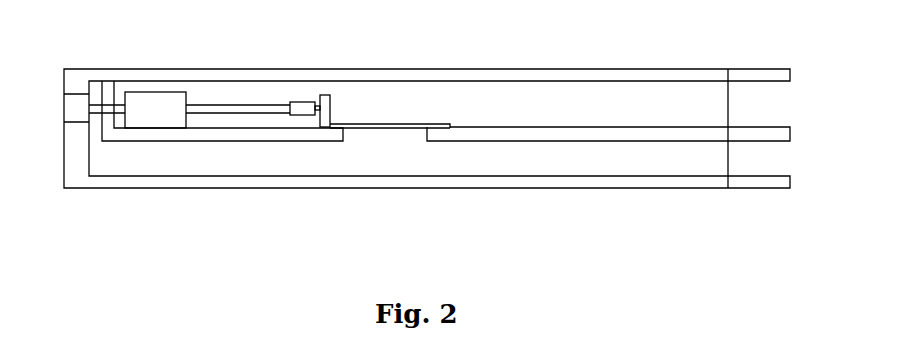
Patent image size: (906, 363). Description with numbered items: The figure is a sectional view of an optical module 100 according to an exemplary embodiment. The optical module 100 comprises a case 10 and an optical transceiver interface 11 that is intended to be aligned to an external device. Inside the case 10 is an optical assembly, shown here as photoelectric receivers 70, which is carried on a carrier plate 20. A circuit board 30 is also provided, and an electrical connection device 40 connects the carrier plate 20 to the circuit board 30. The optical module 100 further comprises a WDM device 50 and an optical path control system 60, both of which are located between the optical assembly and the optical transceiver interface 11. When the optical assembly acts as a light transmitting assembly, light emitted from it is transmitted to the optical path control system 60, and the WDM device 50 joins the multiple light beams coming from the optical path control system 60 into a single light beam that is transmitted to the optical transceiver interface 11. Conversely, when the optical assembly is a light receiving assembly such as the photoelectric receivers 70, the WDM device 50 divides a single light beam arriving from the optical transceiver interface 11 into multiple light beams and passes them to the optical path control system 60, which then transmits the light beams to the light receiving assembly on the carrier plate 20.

The optical module 100 is at (114, 31).
The case 10 is at (217, 183).
The optical transceiver interface 11 is at (72, 112).
The carrier plate 20 is at (116, 131).
The circuit board 30 is at (495, 135).
The electrical connection device 40 is at (385, 128).
The WDM device 50 is at (150, 98).
The optical path control system 60 is at (306, 103).
The photoelectric receivers 70 is at (329, 100).